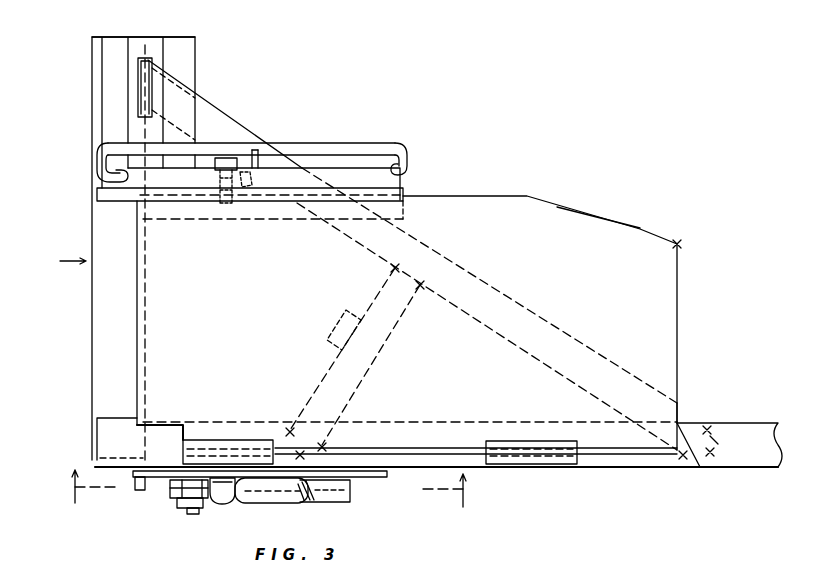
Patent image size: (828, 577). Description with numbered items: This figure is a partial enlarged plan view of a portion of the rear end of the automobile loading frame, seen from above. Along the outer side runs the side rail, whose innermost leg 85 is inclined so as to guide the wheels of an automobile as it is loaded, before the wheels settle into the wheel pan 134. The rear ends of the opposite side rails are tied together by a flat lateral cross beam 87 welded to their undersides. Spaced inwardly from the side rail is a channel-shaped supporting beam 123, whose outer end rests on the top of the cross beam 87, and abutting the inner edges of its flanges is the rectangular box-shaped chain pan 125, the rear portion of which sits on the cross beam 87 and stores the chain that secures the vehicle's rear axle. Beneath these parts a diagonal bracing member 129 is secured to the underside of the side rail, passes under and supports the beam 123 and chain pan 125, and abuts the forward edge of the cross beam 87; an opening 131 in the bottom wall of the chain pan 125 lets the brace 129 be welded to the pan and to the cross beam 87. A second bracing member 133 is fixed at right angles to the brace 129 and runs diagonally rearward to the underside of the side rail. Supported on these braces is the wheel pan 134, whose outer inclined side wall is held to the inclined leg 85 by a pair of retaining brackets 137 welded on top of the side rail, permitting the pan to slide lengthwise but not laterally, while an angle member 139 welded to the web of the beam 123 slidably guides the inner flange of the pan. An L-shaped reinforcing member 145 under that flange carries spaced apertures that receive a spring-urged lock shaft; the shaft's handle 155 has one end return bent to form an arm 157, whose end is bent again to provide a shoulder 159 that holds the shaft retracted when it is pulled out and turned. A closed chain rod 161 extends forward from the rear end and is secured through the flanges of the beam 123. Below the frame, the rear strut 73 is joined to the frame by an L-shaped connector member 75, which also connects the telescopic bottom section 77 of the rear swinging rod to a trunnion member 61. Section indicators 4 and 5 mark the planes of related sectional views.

The section line 4 is at (62, 265).
The section line 5 is at (263, 488).
The trunnion member 61 is at (186, 512).
The rear strut 73 is at (350, 500).
The L-shaped connector member 75 is at (212, 505).
The telescopic bottom section 77 is at (277, 508).
The inclined inner leg 85 is at (618, 464).
The lateral cross beam 87 is at (90, 313).
The channel-shaped supporting beam 123 is at (338, 166).
The chain pan 125 is at (133, 48).
The bracing member 129 is at (680, 413).
The opening 131 is at (150, 58).
The second bracing member 133 is at (376, 356).
The wheel pan 134 is at (683, 242).
The retaining bracket 137 is at (233, 441).
The angle member 139 is at (405, 200).
The L-shaped reinforcing member 145 is at (238, 158).
The handle 155 is at (232, 136).
The arm 157 is at (258, 155).
The shoulder 159 is at (262, 184).
The closed chain rod 161 is at (408, 156).